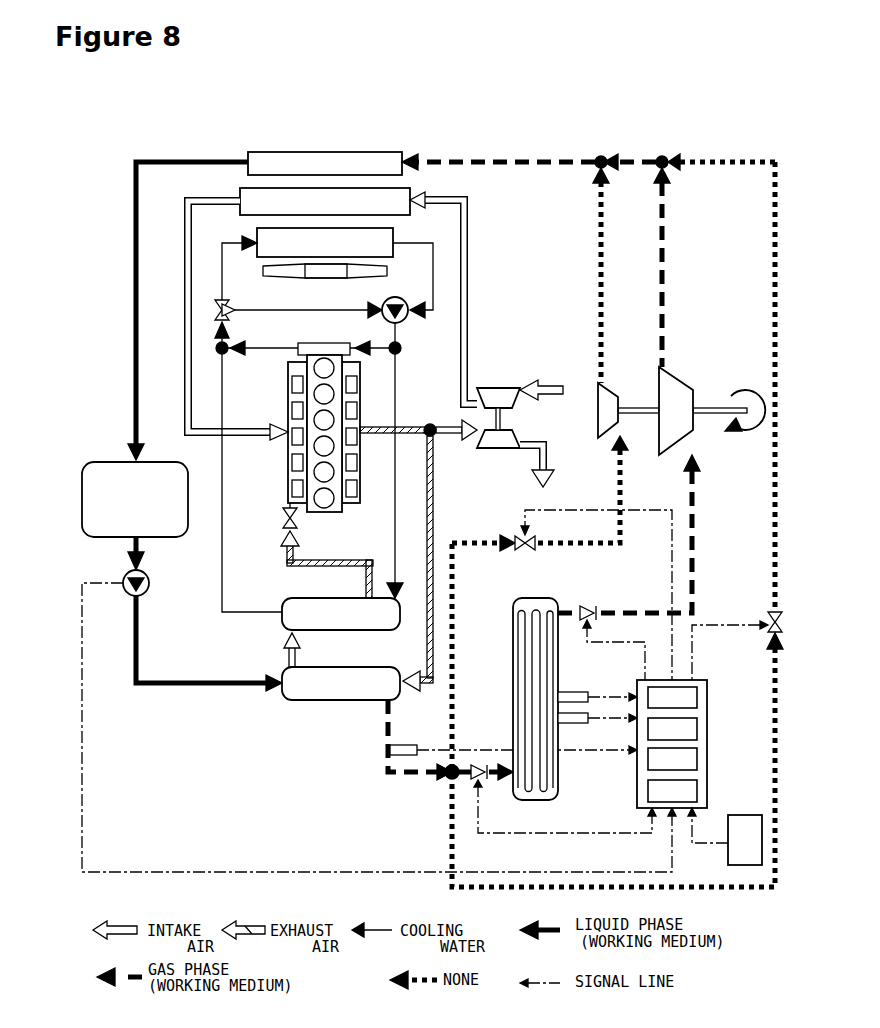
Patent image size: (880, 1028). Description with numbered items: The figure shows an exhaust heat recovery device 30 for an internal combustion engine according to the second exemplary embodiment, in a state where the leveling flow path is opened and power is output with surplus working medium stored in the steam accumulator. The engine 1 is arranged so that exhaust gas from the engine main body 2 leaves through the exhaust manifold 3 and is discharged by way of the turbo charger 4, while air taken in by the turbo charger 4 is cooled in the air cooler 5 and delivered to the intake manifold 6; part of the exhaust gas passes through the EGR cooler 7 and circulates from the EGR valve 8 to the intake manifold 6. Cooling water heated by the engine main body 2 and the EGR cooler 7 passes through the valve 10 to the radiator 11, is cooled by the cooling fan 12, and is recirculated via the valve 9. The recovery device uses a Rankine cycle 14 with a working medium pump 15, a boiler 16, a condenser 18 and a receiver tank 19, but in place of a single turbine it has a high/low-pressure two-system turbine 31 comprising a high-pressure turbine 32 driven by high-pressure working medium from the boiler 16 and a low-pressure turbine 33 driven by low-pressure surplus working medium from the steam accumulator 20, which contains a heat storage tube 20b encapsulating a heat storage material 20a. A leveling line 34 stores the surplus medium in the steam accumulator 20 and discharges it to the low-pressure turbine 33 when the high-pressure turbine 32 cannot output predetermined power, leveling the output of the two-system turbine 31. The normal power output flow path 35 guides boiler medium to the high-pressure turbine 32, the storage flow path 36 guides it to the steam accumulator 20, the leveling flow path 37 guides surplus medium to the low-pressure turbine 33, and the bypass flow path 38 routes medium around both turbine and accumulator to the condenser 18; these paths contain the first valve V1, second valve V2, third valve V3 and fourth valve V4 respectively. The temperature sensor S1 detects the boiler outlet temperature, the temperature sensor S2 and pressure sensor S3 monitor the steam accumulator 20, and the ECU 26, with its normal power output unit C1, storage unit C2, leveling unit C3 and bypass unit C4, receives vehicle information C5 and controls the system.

The engine 1 is at (418, 340).
The engine main body 2 is at (322, 348).
The exhaust manifold 3 is at (360, 394).
The turbo charger 4 is at (510, 388).
The air cooler 5 is at (240, 199).
The intake manifold 6 is at (288, 394).
The EGR cooler 7 is at (298, 598).
The EGR valve 8 is at (283, 520).
The valve 9 is at (398, 297).
The valve 10 is at (215, 310).
The radiator 11 is at (257, 236).
The cooling fan 12 is at (287, 280).
The Rankine cycle 14 is at (540, 160).
The working medium pump 15 is at (150, 583).
The boiler 16 is at (306, 702).
The condenser 18 is at (372, 150).
The receiver tank 19 is at (105, 462).
The steam accumulator 20 is at (509, 681).
The heat storage material 20a is at (520, 680).
The heat storage tube 20b is at (515, 655).
The ECU 26 is at (697, 745).
The exhaust heat recovery device 30 is at (135, 158).
The high/low-pressure two-system turbine 31 is at (681, 372).
The high-pressure turbine 32 is at (612, 386).
The low-pressure turbine 33 is at (690, 390).
The leveling line 34 is at (548, 592).
The normal power output flow path 35 is at (462, 540).
The storage flow path 36 is at (450, 778).
The leveling flow path 37 is at (692, 542).
The bypass flow path 38 is at (737, 162).
The first valve V1 is at (521, 536).
The second valve V2 is at (477, 764).
The third valve V3 is at (587, 606).
The fourth valve V4 is at (782, 622).
The temperature sensor S1 is at (408, 745).
The temperature sensor S2 is at (570, 692).
The pressure sensor S3 is at (575, 725).
The normal power output unit C1 is at (700, 698).
The storage unit C2 is at (700, 732).
The leveling unit C3 is at (700, 762).
The bypass unit C4 is at (700, 792).
The vehicle information C5 is at (762, 843).